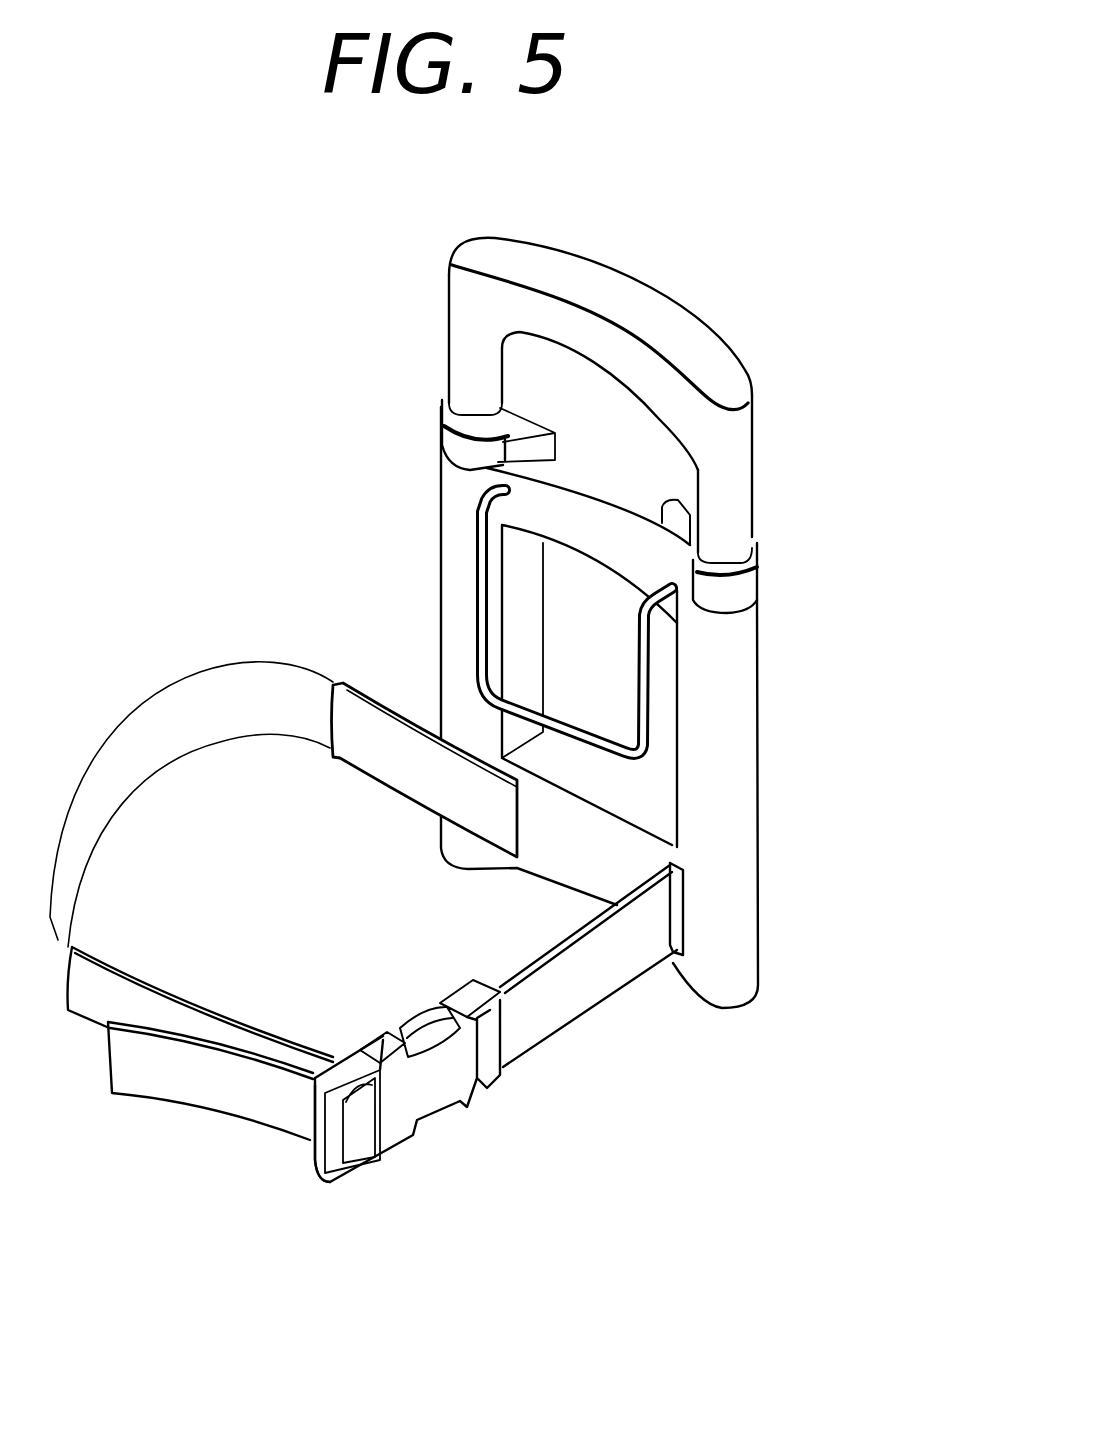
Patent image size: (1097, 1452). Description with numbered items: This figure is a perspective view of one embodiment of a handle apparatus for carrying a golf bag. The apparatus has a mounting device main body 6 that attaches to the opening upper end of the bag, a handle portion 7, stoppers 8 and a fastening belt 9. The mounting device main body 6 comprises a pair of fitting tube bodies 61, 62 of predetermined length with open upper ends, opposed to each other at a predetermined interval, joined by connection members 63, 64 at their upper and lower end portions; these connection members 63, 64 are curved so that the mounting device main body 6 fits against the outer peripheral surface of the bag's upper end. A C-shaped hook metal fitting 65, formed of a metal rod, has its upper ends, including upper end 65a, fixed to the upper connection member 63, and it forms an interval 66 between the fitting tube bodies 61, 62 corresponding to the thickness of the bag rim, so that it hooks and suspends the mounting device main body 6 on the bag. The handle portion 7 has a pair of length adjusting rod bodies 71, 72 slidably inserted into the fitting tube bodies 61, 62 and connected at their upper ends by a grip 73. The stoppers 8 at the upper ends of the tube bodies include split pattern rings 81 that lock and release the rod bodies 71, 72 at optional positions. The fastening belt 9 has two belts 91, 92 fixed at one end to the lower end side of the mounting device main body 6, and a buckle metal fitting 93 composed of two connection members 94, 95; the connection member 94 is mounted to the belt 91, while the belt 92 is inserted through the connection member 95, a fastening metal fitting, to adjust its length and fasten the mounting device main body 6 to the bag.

The mounting device main body 6 is at (593, 705).
The fitting tube body 61 is at (593, 670).
The fitting tube body 62 is at (740, 692).
The connection member 63 is at (600, 487).
The connection member 64 is at (550, 885).
The hook metal fitting 65 is at (570, 601).
The upper end of hook metal fitting 65a is at (503, 490).
The interval 66 is at (665, 708).
The handle portion 7 is at (597, 363).
The length adjusting rod body 71 is at (447, 365).
The length adjusting rod body 72 is at (737, 450).
The grip 73 is at (648, 292).
The stopper 8 is at (593, 472).
The split pattern ring 81 is at (455, 450).
The fastening belt 9 is at (370, 979).
The belt 91 is at (610, 980).
The belt 92 is at (352, 760).
The buckle metal fitting 93 is at (378, 1015).
The connection member 94 is at (438, 1148).
The connection member 95 is at (333, 1168).